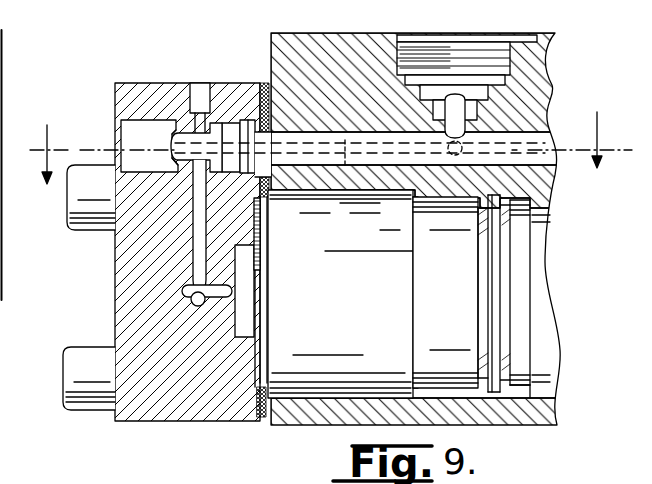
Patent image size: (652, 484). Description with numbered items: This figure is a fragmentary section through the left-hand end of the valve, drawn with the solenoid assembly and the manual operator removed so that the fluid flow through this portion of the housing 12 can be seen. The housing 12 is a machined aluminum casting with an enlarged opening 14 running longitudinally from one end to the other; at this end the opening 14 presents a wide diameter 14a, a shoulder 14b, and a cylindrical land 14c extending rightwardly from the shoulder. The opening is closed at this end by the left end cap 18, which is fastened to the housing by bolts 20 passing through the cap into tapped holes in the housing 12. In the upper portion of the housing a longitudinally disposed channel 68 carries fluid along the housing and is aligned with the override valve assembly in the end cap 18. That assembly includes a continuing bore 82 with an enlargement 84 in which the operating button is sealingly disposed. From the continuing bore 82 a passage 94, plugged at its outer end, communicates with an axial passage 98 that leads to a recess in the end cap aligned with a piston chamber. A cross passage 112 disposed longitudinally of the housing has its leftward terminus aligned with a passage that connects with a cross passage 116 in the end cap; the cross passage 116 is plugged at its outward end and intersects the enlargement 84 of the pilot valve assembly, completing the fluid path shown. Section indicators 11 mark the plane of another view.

The section line 11- 11 is at (331, 163).
The housing 12 is at (540, 92).
The enlarged opening 14 is at (443, 294).
The wide diameter 14a is at (320, 190).
The shoulder 14b is at (413, 194).
The cylindrical land 14c is at (437, 197).
The left end cap 18 is at (115, 272).
The bolts 20 is at (95, 230).
The channel 68 is at (534, 140).
The continuing bore 82 is at (178, 154).
The enlargement 84 is at (131, 154).
The passage 94 is at (201, 210).
The axial passage 98 is at (225, 287).
The cross passage 112 is at (346, 140).
The cross passage 116 is at (166, 151).